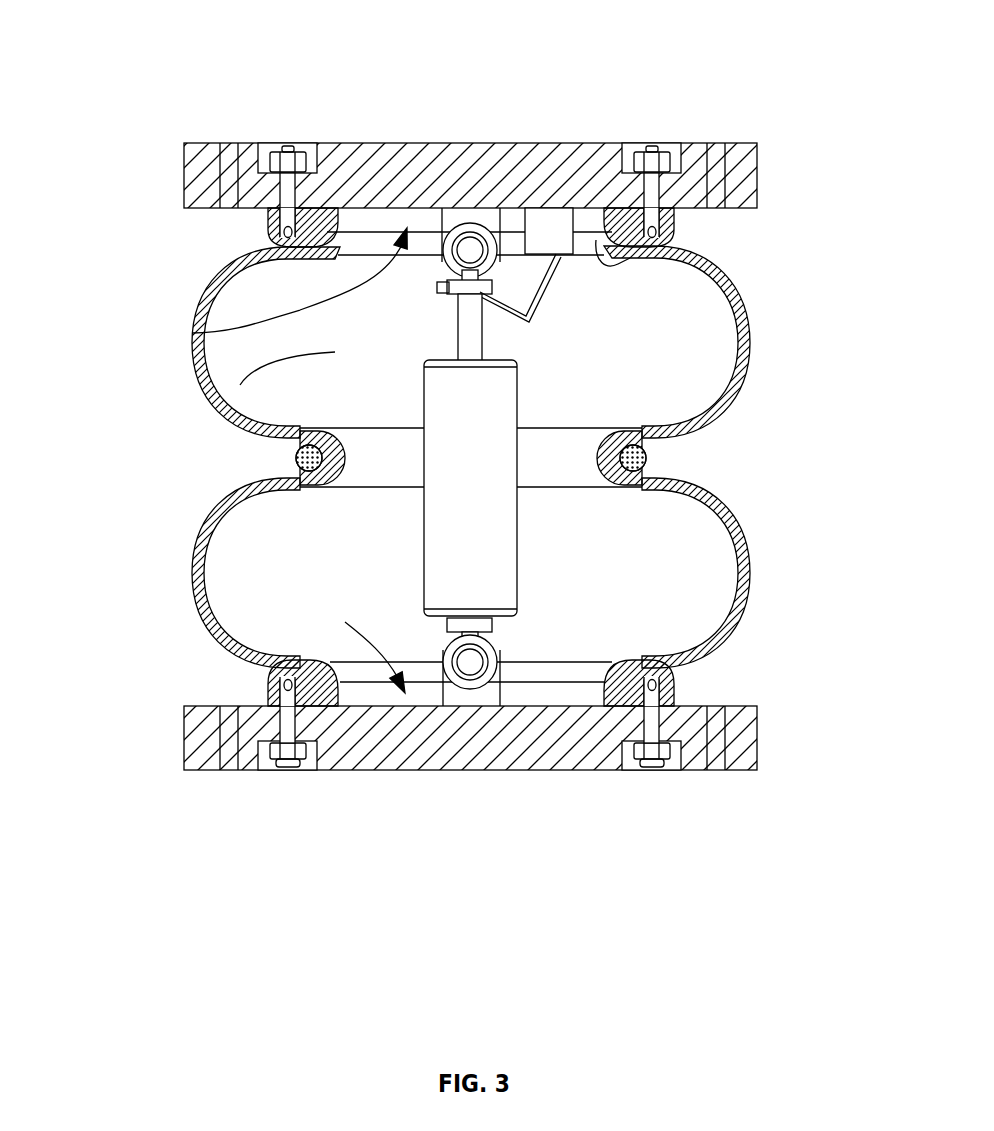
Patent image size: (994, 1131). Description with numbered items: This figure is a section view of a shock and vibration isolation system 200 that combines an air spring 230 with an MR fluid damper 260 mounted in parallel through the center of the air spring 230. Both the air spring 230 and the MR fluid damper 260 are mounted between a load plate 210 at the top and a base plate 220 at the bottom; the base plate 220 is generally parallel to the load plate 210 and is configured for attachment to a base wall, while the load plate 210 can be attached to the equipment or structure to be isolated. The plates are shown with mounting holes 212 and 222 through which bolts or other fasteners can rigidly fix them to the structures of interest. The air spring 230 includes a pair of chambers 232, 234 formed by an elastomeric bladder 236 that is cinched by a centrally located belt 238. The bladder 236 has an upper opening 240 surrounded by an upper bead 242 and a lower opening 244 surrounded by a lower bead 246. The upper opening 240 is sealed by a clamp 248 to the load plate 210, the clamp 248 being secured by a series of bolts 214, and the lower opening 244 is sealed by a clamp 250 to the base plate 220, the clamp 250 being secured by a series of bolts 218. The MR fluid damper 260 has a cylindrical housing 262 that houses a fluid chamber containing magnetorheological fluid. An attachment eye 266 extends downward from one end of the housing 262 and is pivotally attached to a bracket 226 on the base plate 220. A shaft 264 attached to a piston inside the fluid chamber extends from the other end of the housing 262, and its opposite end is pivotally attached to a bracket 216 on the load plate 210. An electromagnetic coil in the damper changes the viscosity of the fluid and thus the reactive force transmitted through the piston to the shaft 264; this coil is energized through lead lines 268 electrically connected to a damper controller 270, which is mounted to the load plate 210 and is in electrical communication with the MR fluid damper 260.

The shock and vibration isolation system 200 is at (165, 100).
The load plate 210 is at (530, 143).
The mounting holes 212 is at (738, 151).
The bolts 214 is at (287, 146).
The bracket 216 is at (563, 268).
The bolts 218 is at (648, 772).
The base plate 220 is at (347, 772).
The mounting holes 222 is at (738, 772).
The bracket 226 is at (500, 652).
The air spring 230 is at (192, 353).
The chamber 232 is at (227, 408).
The chamber 234 is at (348, 543).
The elastomeric bladder 236 is at (225, 273).
The belt 238 is at (295, 462).
The upper opening 240 is at (192, 333).
The upper bead 242 is at (598, 253).
The lower opening 244 is at (345, 622).
The lower bead 246 is at (333, 652).
The clamp 248 is at (267, 230).
The clamp 250 is at (268, 690).
The MR fluid damper 260 is at (519, 594).
The cylindrical housing 262 is at (519, 558).
The shaft 264 is at (519, 372).
The attachment eye 266 is at (500, 632).
The lead lines 268 is at (483, 331).
The damper controller 270 is at (560, 258).